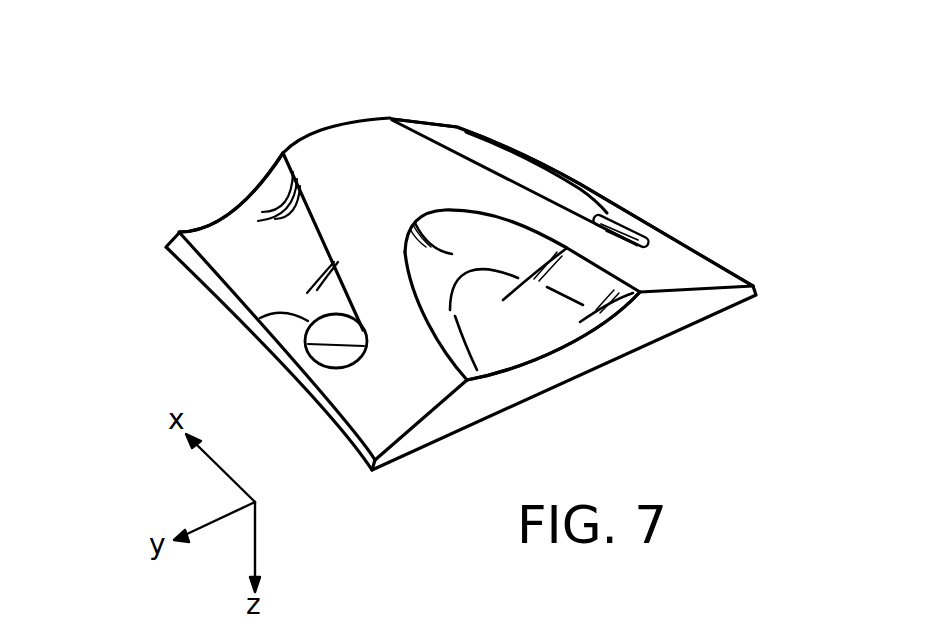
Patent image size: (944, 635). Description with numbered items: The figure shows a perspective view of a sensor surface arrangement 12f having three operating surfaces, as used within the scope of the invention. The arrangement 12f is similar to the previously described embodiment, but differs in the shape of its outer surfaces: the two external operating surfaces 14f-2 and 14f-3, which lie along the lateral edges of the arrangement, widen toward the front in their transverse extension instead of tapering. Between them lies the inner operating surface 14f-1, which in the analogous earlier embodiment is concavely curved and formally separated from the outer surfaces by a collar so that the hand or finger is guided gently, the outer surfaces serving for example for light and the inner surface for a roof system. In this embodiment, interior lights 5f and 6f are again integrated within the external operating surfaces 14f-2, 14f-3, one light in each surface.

The sensor surface arrangement 12f is at (302, 98).
The operating surface 14f-1 is at (507, 323).
The operating surface 14f-2 is at (502, 167).
The operating surface 14f-3 is at (252, 255).
The interior light 5f is at (637, 218).
The interior light 6f is at (262, 318).